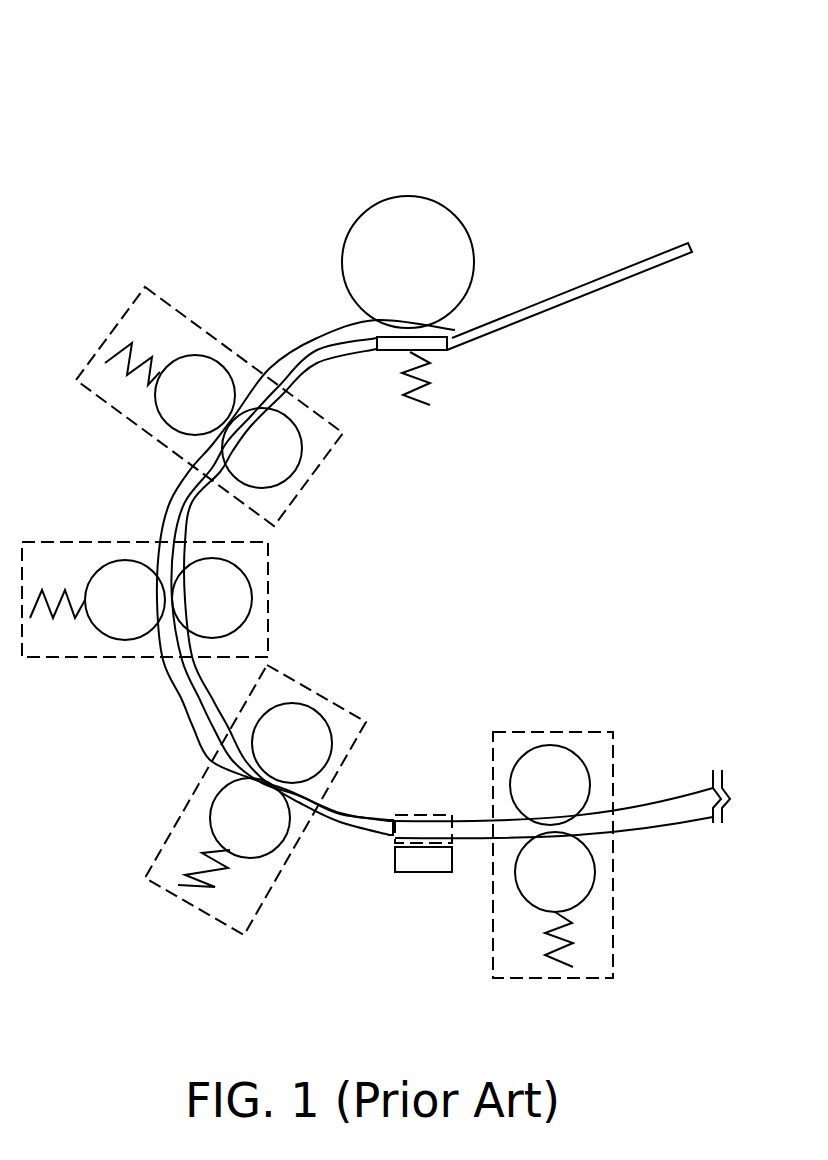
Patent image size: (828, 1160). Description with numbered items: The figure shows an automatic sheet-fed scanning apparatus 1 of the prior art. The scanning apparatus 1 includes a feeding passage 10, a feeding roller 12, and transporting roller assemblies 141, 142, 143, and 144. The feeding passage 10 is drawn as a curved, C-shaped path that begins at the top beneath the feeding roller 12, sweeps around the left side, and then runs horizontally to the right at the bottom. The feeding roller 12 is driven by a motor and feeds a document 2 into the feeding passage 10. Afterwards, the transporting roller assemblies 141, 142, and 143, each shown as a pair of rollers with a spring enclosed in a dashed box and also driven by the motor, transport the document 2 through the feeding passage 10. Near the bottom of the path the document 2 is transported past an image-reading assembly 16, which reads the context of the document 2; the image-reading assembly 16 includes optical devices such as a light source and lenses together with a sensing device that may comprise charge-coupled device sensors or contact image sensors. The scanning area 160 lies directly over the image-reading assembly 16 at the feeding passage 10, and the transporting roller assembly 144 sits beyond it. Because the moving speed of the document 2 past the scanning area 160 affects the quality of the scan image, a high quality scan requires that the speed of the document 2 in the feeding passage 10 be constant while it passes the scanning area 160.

The automatic sheet-fed scanning apparatus 1 is at (321, 112).
The document 2 is at (298, 358).
The feeding passage 10 is at (167, 502).
The feeding roller 12 is at (438, 202).
The image-reading assembly 16 is at (425, 876).
The transporting roller assembly 141 is at (183, 317).
The transporting roller assembly 142 is at (268, 584).
The transporting roller assembly 143 is at (330, 702).
The transporting roller assembly 144 is at (563, 732).
The scanning area 160 is at (422, 816).